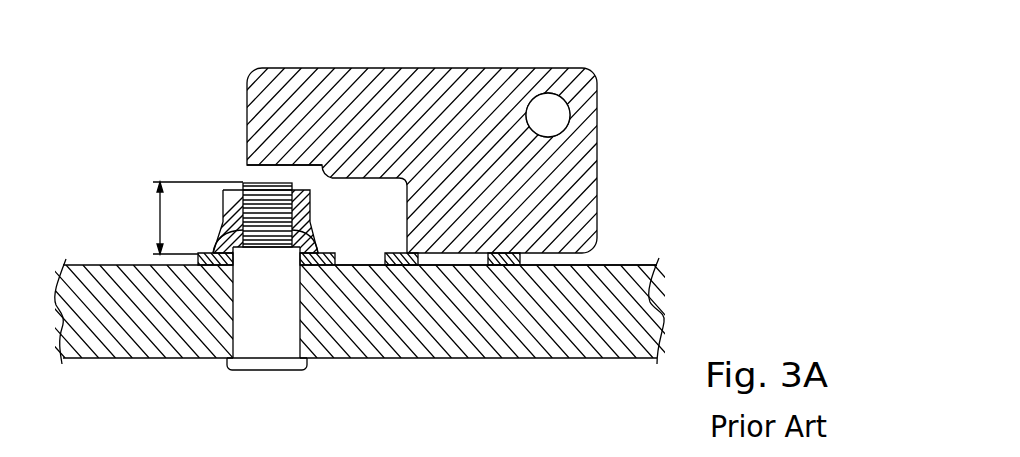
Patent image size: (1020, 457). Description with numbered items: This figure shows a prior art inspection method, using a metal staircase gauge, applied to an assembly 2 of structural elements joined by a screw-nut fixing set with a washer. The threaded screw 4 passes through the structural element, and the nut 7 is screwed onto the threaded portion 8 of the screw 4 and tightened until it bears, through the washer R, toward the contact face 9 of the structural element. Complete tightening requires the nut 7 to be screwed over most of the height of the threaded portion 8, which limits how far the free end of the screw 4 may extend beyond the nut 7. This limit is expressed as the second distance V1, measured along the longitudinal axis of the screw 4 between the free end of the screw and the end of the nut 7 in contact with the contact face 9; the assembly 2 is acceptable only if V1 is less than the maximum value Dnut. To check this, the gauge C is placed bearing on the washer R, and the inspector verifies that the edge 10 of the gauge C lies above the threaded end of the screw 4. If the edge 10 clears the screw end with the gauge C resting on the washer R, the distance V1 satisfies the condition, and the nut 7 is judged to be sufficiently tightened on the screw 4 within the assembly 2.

The assembly 2 is at (678, 307).
The threaded screw 4 is at (212, 435).
The nut 7 is at (228, 210).
The threaded portion 8 is at (408, 265).
The contact face 9 is at (617, 262).
The edge of the gauge 10 is at (292, 160).
The gauge C is at (498, 85).
The washer R is at (324, 268).
The second distance V1 is at (182, 218).